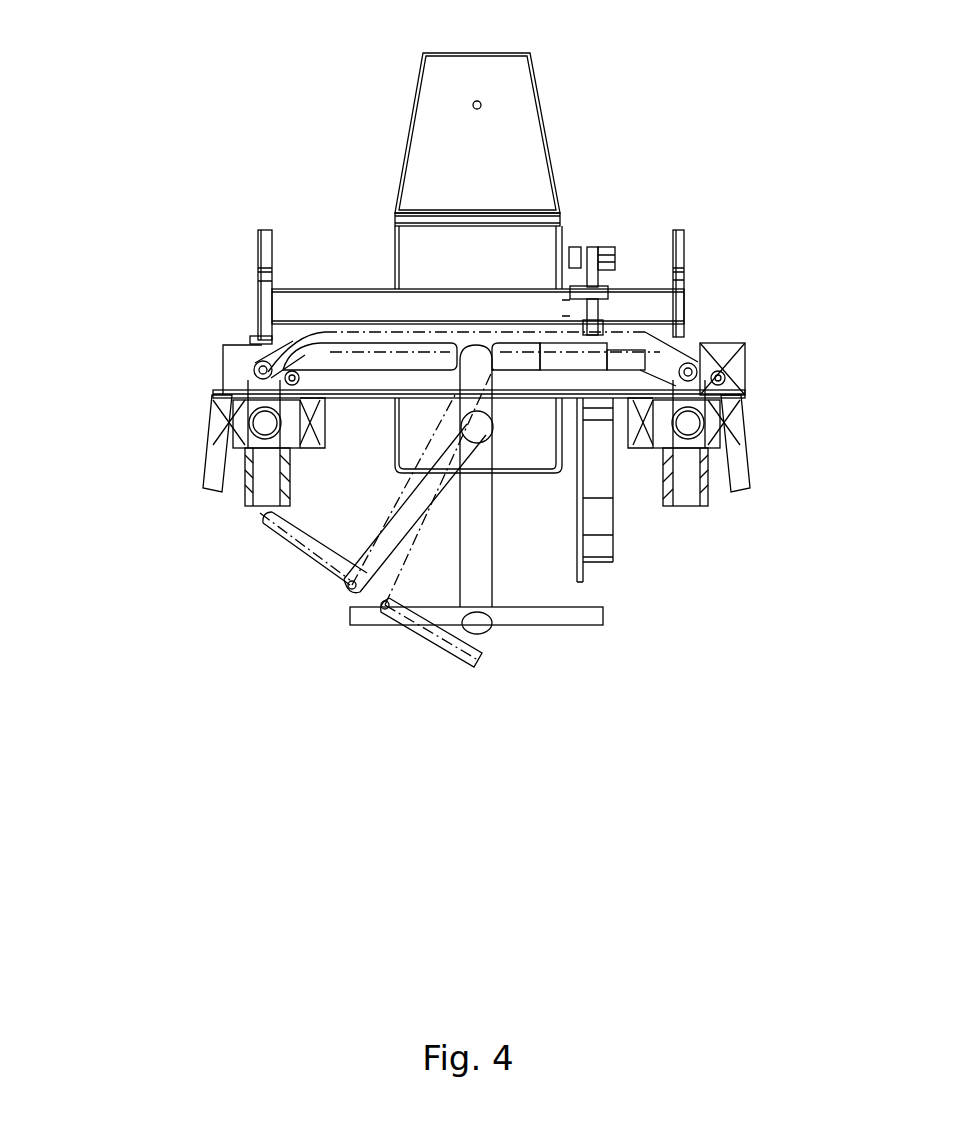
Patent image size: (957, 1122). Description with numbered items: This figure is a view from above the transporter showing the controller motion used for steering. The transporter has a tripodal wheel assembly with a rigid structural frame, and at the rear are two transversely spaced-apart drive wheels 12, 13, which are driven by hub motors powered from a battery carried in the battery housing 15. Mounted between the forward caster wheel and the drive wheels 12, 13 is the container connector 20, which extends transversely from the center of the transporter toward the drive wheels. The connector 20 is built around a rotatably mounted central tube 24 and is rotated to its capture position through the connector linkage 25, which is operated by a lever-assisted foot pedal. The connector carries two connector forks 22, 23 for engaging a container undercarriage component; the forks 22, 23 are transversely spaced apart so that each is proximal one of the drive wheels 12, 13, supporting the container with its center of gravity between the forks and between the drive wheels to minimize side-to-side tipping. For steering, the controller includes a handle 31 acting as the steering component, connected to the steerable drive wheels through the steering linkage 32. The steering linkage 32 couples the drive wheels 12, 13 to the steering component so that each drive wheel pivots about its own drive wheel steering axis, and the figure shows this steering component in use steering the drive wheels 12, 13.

The drive wheel 12 is at (688, 507).
The drive wheel 13 is at (265, 510).
The battery housing 15 is at (392, 257).
The container connector 20 is at (637, 266).
The connector fork 22 is at (685, 250).
The connector fork 23 is at (258, 252).
The central tube 24 is at (547, 292).
The connector linkage 25 is at (593, 249).
The handle 31 is at (528, 626).
The steering linkage 32 is at (288, 342).